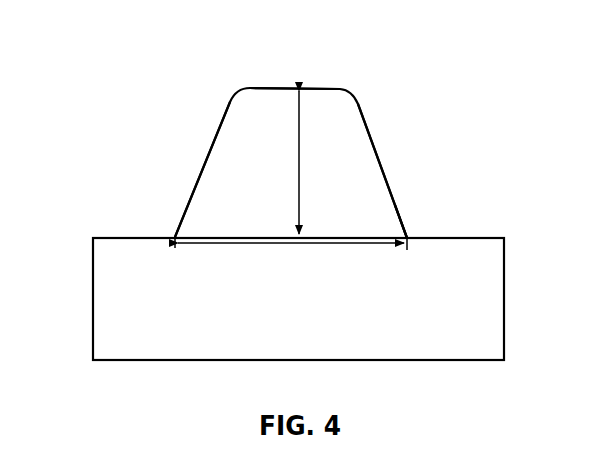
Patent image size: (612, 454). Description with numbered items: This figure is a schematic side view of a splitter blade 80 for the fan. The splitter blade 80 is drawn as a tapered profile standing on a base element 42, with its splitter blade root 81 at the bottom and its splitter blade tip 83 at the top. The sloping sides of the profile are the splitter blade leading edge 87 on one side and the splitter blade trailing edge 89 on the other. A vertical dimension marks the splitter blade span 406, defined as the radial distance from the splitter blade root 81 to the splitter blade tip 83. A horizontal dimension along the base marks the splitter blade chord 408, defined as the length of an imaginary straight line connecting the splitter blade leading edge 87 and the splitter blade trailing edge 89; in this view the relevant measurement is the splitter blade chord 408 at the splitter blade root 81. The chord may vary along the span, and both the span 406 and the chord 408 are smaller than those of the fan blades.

The splitter blade 80 is at (170, 62).
The splitter blade tip 83 is at (265, 87).
The splitter blade leading edge 87 is at (203, 162).
The splitter blade trailing edge 89 is at (378, 157).
The splitter blade root 81 is at (363, 237).
The substrate 42 is at (93, 320).
The splitter blade span 406 is at (300, 142).
The splitter blade chord 408 is at (238, 245).